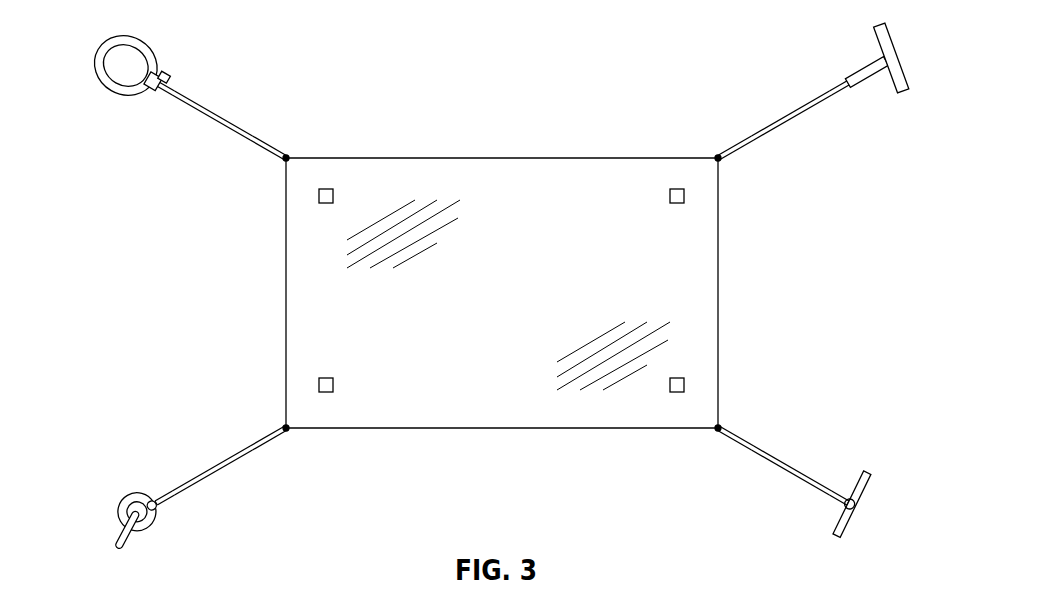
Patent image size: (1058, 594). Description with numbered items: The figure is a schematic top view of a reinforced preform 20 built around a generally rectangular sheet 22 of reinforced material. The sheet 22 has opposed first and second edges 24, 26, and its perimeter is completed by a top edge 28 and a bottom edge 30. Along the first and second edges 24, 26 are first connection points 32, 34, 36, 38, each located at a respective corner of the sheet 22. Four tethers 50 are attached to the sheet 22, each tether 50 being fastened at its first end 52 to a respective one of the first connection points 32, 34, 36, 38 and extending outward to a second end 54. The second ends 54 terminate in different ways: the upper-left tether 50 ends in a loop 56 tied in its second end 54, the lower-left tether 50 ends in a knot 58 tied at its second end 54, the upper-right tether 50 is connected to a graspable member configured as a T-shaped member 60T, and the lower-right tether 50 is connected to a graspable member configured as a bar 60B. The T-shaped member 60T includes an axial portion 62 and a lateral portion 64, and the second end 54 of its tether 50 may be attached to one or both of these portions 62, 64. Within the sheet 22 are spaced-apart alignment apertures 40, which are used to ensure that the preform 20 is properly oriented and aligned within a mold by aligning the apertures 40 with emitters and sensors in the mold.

The reinforced preform 20 is at (386, 58).
The sheet 22 is at (504, 294).
The first edge 24 is at (286, 284).
The second edge 26 is at (719, 283).
The top edge 28 is at (503, 157).
The bottom edge 30 is at (510, 429).
The first connection point 32 is at (283, 163).
The first connection point 34 is at (287, 433).
The first connection point 36 is at (716, 155).
The first connection point 38 is at (718, 433).
The alignment apertures 40 is at (334, 191).
The tether 50 is at (221, 118).
The first end 52 is at (272, 147).
The second end 54 is at (441, 284).
The loop 56 is at (110, 38).
The knot 58 is at (127, 502).
The T-shaped member 60T is at (884, 106).
The bar 60B is at (870, 488).
The axial portion 62 is at (873, 75).
The lateral portion 64 is at (905, 85).